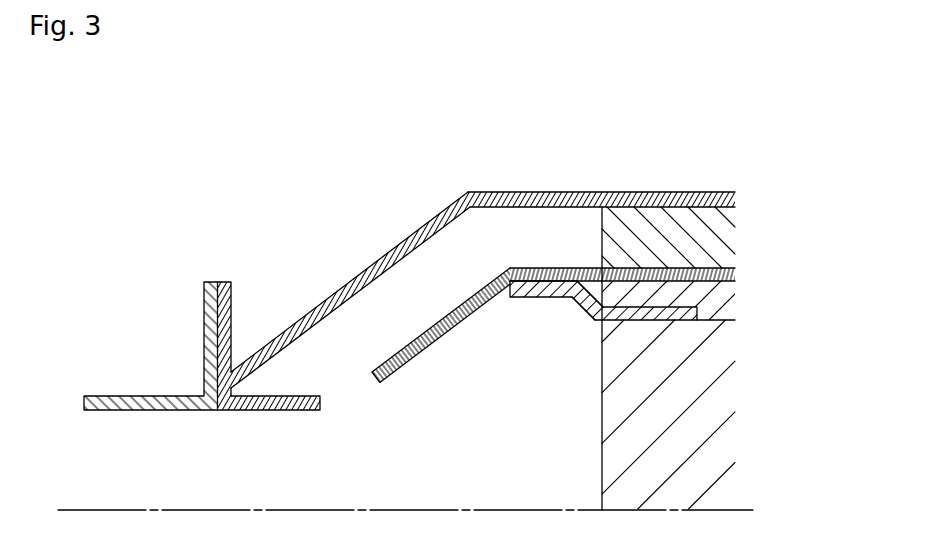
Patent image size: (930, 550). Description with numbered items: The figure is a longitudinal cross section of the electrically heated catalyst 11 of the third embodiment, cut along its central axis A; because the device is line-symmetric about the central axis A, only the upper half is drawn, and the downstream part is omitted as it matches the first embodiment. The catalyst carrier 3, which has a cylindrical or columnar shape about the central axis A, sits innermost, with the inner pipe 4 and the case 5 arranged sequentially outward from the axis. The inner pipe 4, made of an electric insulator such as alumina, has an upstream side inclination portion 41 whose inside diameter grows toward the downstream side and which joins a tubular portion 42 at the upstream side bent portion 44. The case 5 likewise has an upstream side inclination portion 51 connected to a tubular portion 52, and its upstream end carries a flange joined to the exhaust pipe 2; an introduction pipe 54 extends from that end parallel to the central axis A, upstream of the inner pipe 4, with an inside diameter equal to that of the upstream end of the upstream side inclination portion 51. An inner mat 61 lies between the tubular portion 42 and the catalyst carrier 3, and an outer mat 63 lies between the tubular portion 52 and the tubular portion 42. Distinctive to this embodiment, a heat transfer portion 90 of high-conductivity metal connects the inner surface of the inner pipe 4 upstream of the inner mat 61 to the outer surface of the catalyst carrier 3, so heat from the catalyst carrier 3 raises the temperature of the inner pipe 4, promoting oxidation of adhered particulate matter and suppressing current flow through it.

The electrically heated catalyst 11 is at (258, 178).
The exhaust pipe 2 is at (142, 397).
The case 5 is at (491, 192).
The upstream side inclination portion 51 is at (378, 258).
The tubular portion 52 is at (553, 192).
The introduction pipe 54 is at (273, 410).
The inner pipe 4 is at (380, 382).
The upstream side inclination portion 41 is at (430, 345).
The tubular portion 42 is at (577, 268).
The upstream side bent portion 44 is at (500, 273).
The heat transfer portion 90 is at (583, 297).
The outer mat 63 is at (695, 237).
The inner mat 61 is at (695, 292).
The catalyst carrier 3 is at (697, 410).
The central axis A is at (353, 510).